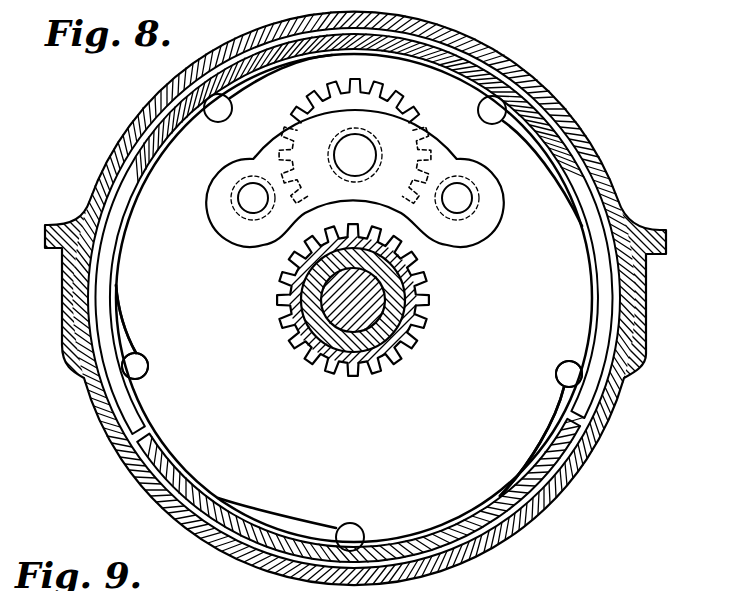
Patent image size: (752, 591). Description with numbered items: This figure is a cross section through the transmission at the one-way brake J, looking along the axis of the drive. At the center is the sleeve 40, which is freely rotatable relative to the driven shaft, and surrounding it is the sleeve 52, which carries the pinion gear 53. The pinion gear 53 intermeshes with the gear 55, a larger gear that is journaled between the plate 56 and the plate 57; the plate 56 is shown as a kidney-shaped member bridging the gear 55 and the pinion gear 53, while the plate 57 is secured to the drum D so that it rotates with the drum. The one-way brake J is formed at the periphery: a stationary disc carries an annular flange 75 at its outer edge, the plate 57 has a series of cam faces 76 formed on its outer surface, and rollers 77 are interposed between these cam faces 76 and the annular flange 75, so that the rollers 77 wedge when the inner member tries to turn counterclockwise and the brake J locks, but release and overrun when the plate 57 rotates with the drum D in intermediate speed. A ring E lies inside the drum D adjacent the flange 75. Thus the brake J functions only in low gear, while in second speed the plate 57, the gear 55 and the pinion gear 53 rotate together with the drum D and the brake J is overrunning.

The drum D is at (547, 104).
The ring E is at (520, 66).
The one-way brake J is at (152, 352).
The sleeve 40 is at (406, 288).
The sleeve 52 is at (419, 311).
The pinion gear 53 is at (423, 341).
The gear 55 is at (396, 89).
The plate 56 is at (500, 182).
The plate 57 is at (556, 269).
The annular flange 75 is at (426, 554).
The cam faces 76 is at (249, 92).
The rollers 77 is at (214, 122).